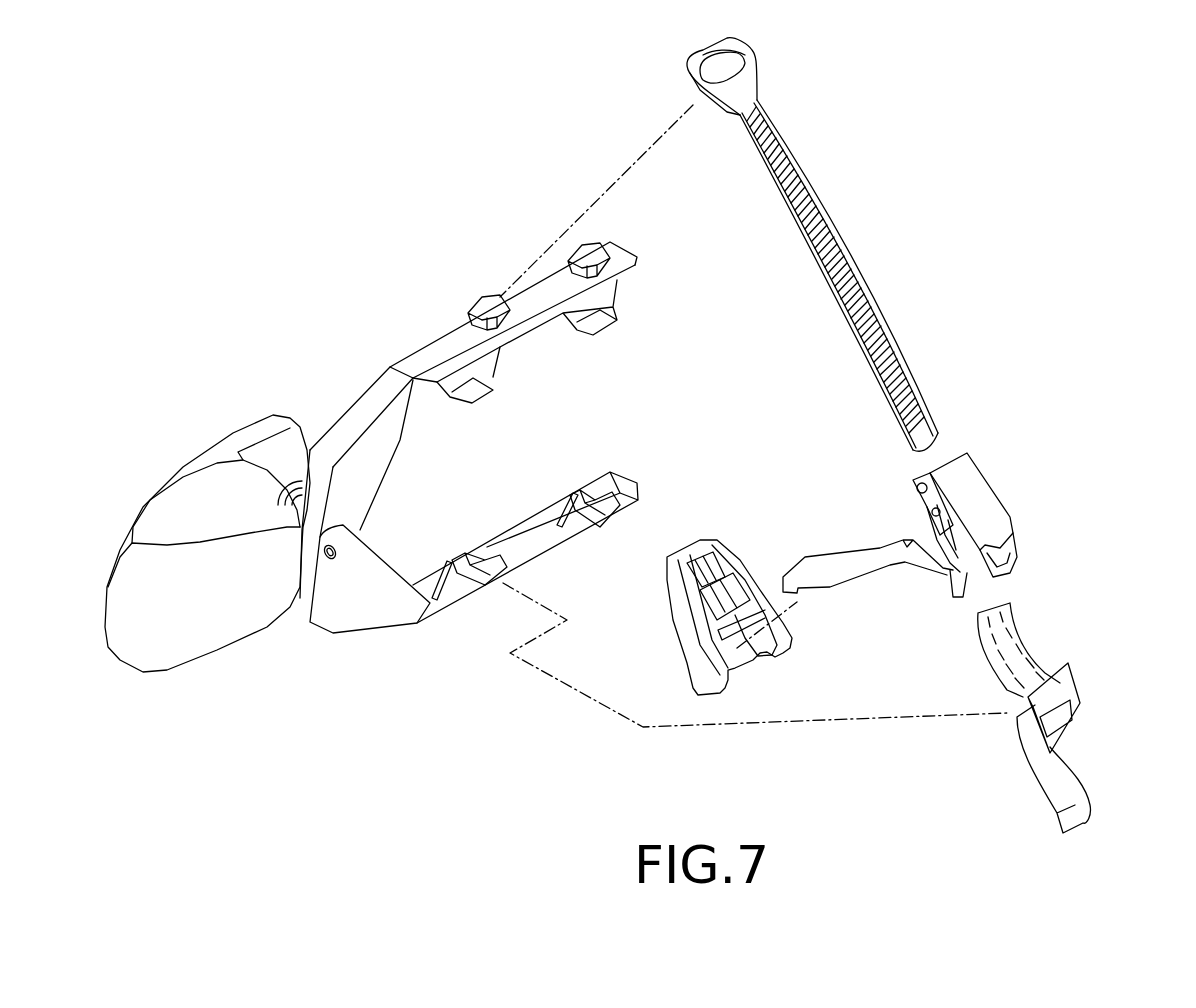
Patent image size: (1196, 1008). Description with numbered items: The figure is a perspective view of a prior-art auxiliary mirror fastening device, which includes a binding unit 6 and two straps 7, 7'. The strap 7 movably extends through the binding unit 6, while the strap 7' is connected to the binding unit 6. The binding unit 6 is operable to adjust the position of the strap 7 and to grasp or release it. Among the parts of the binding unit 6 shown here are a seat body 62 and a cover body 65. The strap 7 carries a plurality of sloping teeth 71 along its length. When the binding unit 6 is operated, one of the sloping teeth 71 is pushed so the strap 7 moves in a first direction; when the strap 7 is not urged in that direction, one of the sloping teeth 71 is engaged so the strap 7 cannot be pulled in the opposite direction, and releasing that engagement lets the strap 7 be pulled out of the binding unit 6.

The binding unit 6 is at (1012, 518).
The seat body 62 is at (927, 510).
The cover body 65 is at (957, 483).
The strap 7 is at (812, 245).
The sloping teeth 71 is at (825, 212).
The strap 7' is at (1075, 703).